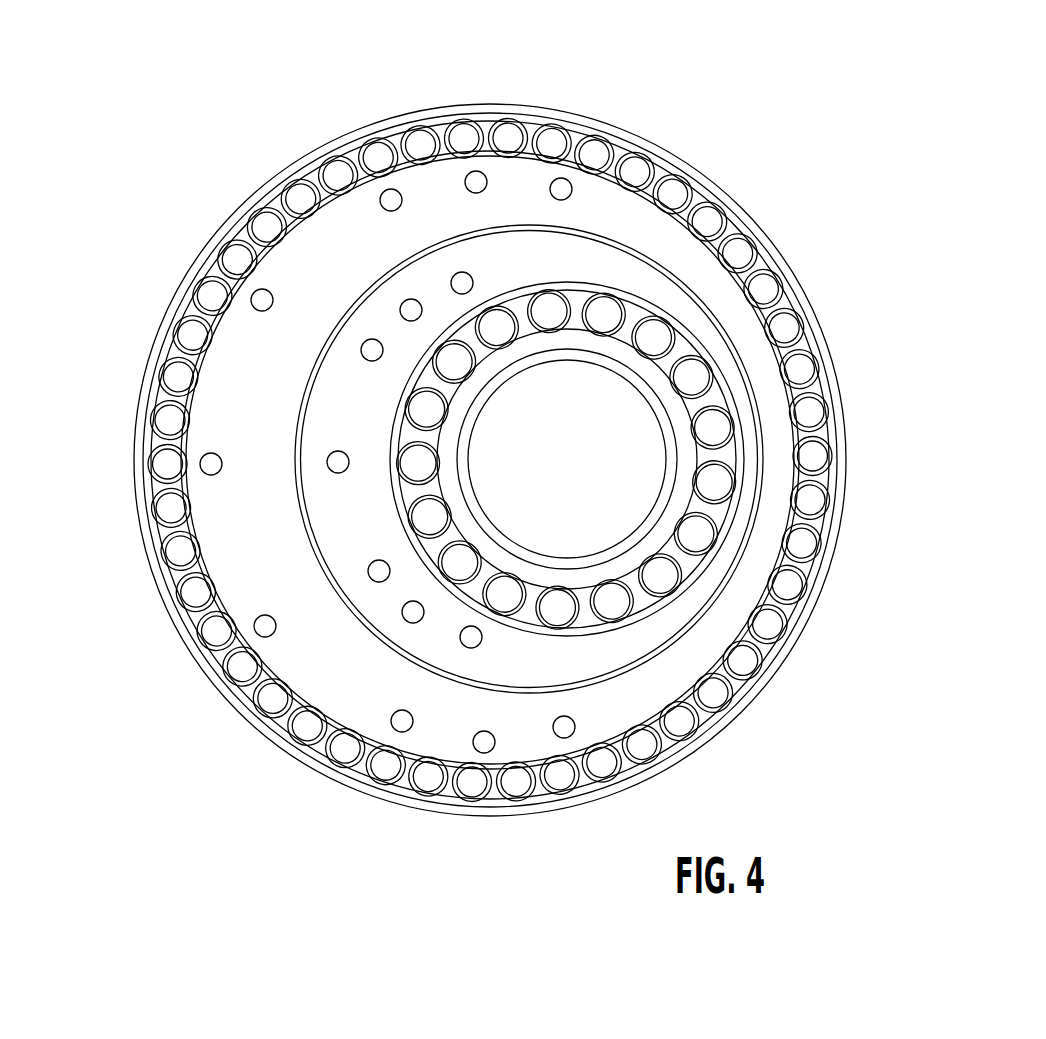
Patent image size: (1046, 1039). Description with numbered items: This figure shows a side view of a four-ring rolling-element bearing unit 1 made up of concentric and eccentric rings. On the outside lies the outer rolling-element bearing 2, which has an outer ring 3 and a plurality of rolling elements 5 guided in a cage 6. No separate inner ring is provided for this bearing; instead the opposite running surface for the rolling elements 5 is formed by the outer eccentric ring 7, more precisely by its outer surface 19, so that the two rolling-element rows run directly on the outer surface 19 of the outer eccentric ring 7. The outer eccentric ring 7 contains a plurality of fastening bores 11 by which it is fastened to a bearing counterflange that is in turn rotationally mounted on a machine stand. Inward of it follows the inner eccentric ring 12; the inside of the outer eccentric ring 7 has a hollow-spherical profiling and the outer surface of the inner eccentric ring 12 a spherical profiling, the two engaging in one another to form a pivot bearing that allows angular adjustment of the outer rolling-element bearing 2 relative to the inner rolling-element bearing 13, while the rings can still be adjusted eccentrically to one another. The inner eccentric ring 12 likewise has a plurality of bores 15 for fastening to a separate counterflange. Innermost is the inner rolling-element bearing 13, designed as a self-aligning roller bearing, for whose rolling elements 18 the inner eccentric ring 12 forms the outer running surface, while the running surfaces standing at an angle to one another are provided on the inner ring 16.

The rolling-element bearing unit 1 is at (203, 115).
The outer rolling-element bearing 2 is at (703, 132).
The outer ring 3 is at (757, 228).
The rolling elements 5 is at (780, 322).
The cage 6 is at (800, 338).
The outer eccentric ring 7 is at (638, 690).
The fastening bores 11 is at (476, 182).
The inner eccentric ring 12 is at (337, 505).
The inner rolling-element bearing 13 is at (382, 517).
The bores 15 is at (373, 353).
The inner ring 16 is at (553, 577).
The rolling elements 18 is at (692, 378).
The outer surface 19 is at (820, 487).